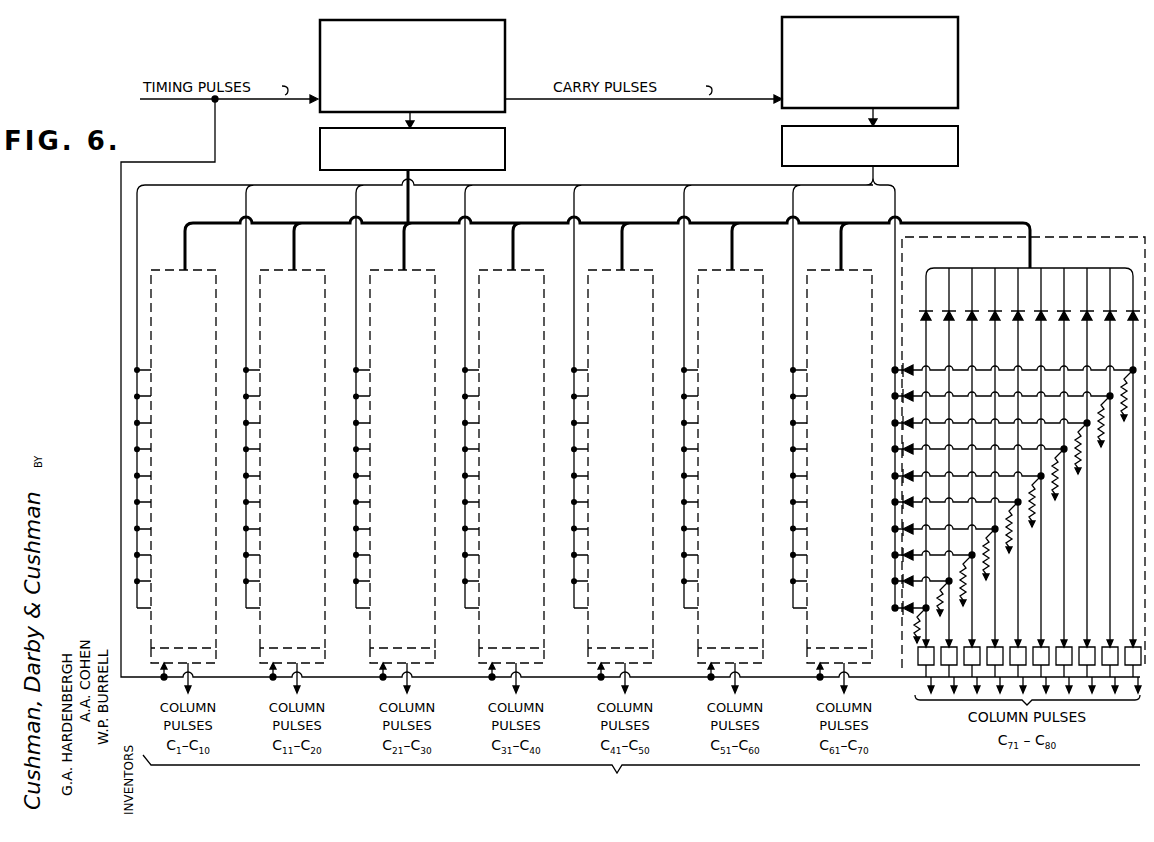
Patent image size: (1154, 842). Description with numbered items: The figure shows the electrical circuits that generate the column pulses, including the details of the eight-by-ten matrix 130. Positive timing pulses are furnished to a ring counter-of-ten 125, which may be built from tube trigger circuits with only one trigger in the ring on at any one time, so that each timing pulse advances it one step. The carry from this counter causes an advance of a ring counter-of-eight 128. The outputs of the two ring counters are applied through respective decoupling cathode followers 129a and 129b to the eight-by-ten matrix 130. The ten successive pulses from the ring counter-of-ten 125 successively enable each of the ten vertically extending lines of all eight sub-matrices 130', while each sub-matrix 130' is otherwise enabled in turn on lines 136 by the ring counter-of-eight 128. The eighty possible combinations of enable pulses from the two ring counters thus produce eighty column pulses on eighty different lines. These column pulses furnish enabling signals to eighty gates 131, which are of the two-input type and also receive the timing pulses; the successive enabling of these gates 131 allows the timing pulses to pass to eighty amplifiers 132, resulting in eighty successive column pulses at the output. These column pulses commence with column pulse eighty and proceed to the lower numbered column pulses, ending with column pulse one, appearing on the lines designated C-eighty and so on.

The ring counter-of-ten 125 is at (505, 63).
The ring counter-of-eight 128 is at (960, 82).
The decoupling cathode followers 129a is at (506, 166).
The decoupling cathode followers 129b is at (960, 148).
The lines 136 is at (905, 210).
The sub-matrices 130' is at (662, 405).
The gates 131 is at (807, 664).
The eight-by-ten matrix 130 is at (1028, 633).
The amplifiers 132 is at (641, 782).